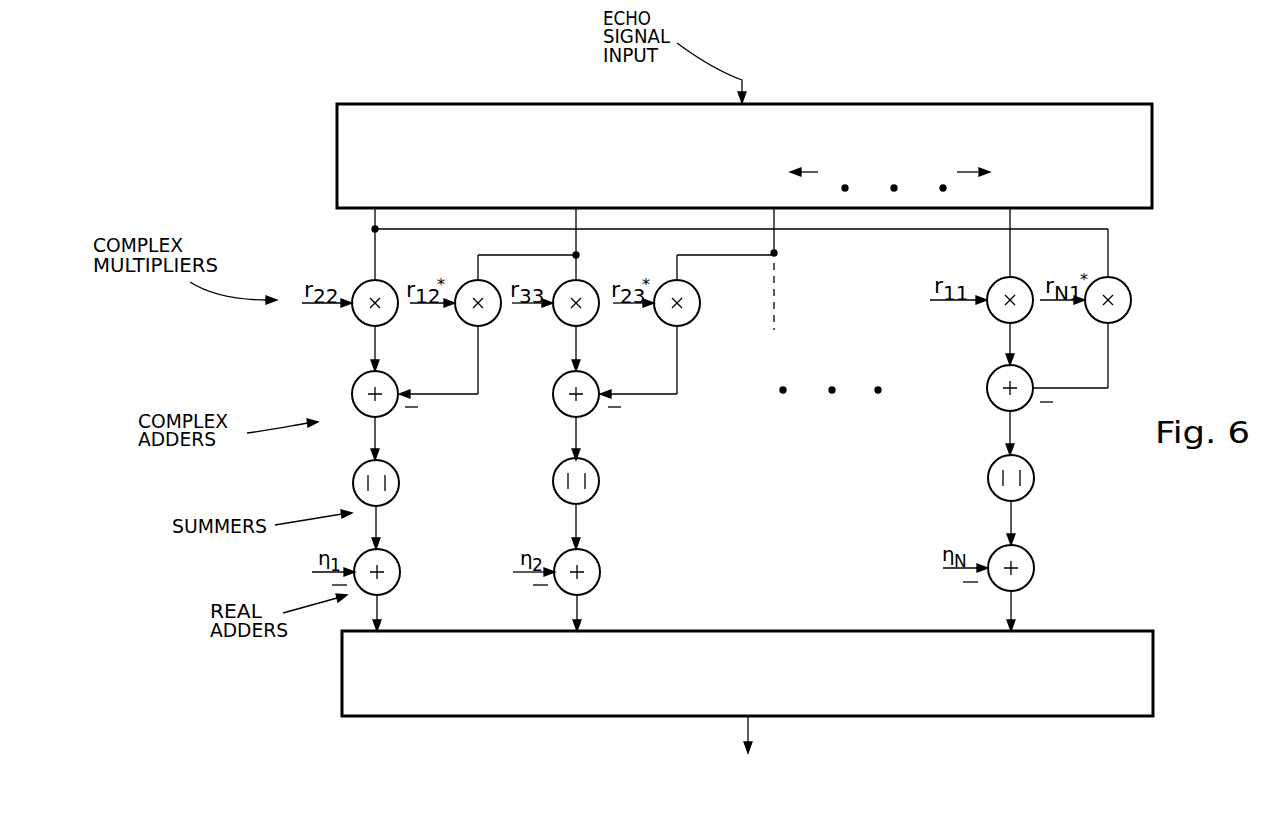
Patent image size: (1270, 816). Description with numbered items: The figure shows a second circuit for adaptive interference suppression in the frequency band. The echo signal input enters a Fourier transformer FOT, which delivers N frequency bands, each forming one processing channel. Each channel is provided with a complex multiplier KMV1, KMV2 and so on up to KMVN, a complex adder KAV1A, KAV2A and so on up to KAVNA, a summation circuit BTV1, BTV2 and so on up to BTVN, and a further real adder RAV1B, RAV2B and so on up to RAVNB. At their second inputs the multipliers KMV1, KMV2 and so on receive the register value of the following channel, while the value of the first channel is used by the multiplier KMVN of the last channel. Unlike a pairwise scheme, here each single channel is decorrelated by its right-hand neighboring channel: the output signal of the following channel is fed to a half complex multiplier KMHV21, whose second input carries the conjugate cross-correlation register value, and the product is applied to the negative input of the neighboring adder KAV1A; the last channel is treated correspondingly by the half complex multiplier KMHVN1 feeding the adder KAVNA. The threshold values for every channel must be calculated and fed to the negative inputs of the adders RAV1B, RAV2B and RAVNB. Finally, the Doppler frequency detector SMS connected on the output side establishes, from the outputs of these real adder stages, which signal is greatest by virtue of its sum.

The Fourier transformer FOT is at (1148, 181).
The complex multiplier KMV1 is at (357, 312).
The half complex multiplier KMHV21 is at (490, 325).
The complex multiplier KMV2 is at (590, 289).
The complex multiplier KMVN is at (1022, 287).
The half complex multiplier KMHVN1 is at (1124, 288).
The complex adder KAV1A is at (357, 397).
The complex adder KAV2A is at (560, 405).
The complex adder KAVNA is at (991, 381).
The summation circuit BTV1 is at (359, 492).
The summation circuit BTV2 is at (595, 496).
The summation circuit BTVN is at (988, 484).
The real adder RAV1B is at (396, 557).
The real adder RAV2B is at (596, 557).
The real adder RAVNB is at (1030, 553).
The Doppler frequency detector SMS is at (1149, 693).